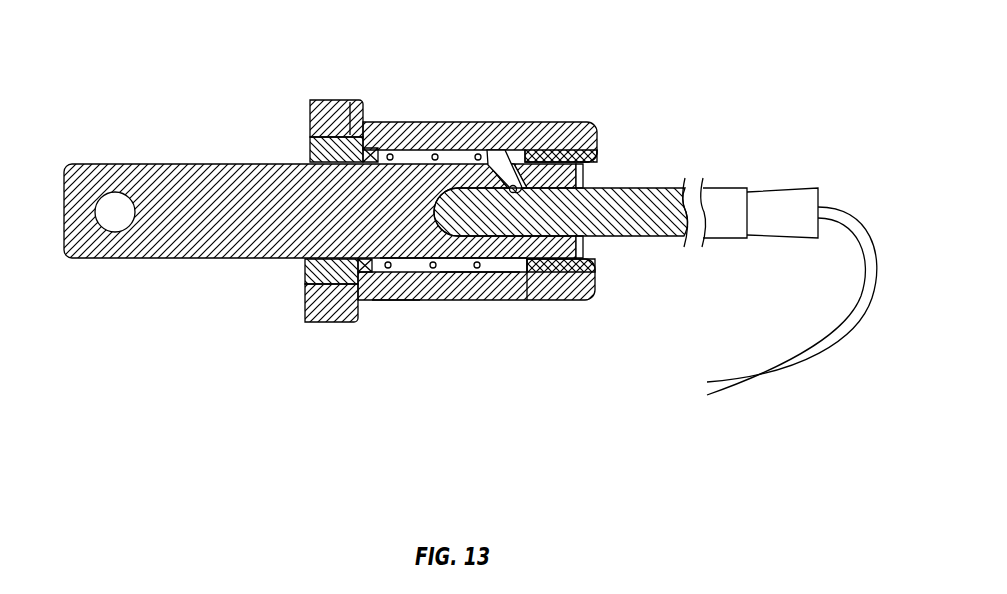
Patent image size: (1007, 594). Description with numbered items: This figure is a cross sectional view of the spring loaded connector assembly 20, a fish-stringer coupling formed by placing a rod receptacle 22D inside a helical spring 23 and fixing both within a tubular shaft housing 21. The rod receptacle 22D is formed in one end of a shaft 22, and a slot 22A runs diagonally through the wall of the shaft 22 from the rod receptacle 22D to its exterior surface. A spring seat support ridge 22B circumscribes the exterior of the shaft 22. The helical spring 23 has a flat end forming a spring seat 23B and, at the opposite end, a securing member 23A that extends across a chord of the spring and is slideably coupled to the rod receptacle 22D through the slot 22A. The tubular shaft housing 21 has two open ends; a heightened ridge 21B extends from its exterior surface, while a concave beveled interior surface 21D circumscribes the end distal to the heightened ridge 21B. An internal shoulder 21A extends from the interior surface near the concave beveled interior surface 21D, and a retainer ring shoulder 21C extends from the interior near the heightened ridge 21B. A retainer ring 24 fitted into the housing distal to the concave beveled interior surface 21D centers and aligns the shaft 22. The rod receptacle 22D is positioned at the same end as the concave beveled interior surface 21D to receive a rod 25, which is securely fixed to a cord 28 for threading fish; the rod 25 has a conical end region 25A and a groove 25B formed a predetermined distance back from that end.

The spring loaded connector assembly 20 is at (277, 100).
The tubular shaft housing 21 is at (437, 125).
The internal shoulder 21A is at (527, 150).
The heightened ridge 21B is at (337, 108).
The retainer ring shoulder 21C is at (350, 102).
The concave beveled interior surface 21D is at (600, 162).
The shaft 22 is at (232, 205).
The slot 22A is at (498, 170).
The spring seat support ridge 22B is at (378, 142).
The rod receptacle 22D is at (446, 272).
The helical spring 23 is at (483, 167).
The securing member 23A is at (510, 158).
The spring seat 23B is at (387, 302).
The retainer ring 24 is at (308, 148).
The rod 25 is at (653, 167).
The conical end region 25A is at (478, 272).
The groove 25B is at (530, 267).
The cord 28 is at (834, 327).